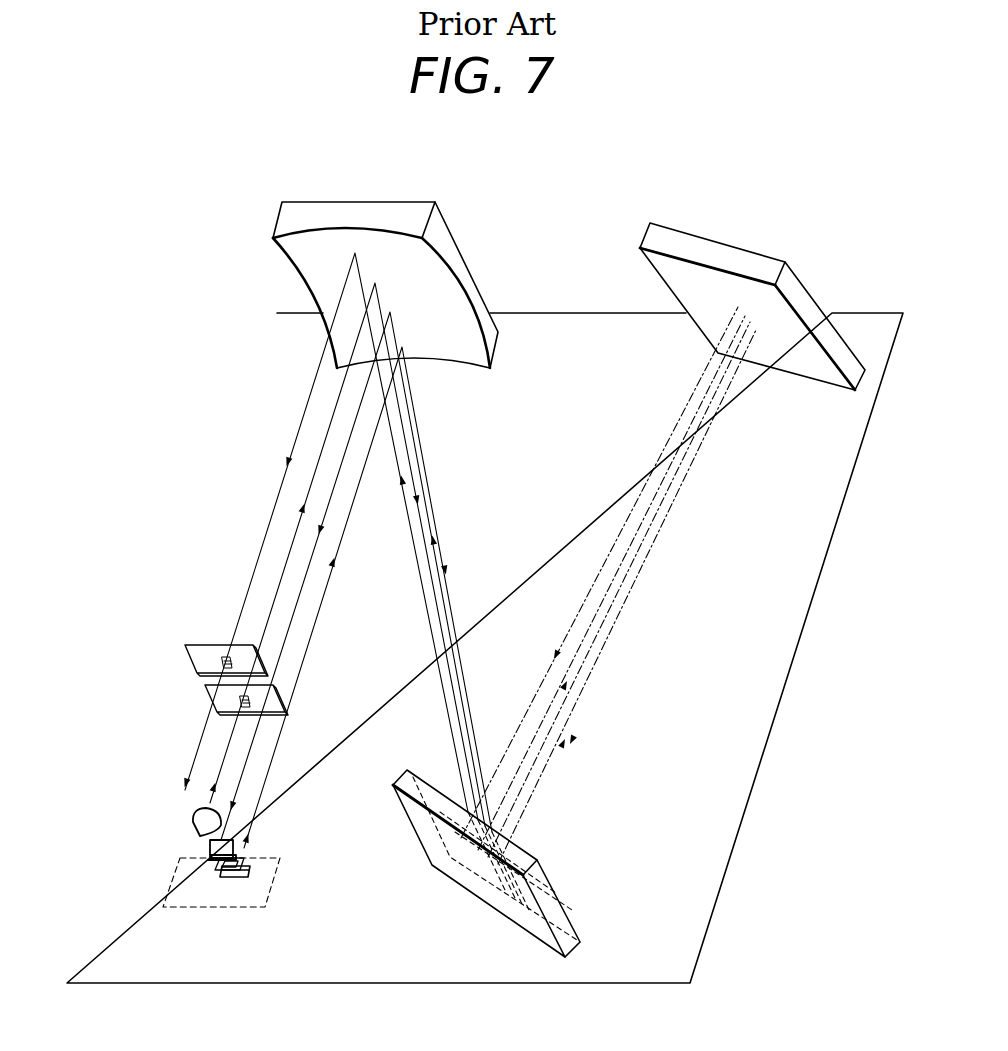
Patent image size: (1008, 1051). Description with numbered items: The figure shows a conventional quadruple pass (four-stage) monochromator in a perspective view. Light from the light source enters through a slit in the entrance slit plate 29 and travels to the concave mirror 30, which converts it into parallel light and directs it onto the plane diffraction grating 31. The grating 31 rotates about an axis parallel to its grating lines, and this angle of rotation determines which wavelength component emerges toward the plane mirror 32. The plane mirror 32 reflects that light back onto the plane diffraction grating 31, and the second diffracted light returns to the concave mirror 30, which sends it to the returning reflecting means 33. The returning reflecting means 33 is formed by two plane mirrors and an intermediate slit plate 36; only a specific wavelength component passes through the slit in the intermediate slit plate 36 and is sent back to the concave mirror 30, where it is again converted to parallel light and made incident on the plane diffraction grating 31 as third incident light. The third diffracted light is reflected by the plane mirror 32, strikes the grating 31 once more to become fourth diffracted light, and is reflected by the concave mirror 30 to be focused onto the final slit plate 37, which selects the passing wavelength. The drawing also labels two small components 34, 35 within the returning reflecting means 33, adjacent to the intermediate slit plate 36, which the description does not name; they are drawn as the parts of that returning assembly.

The entrance slit plate 29 is at (205, 687).
The concave mirror 30 is at (318, 207).
The plane diffraction grating 31 is at (576, 957).
The plane mirror 32 is at (738, 252).
The returning reflecting means 33 is at (263, 898).
The light source 34 is at (210, 850).
The base plate 35 is at (250, 873).
The intermediate slit plate 36 is at (245, 862).
The final slit plate 37 is at (185, 647).